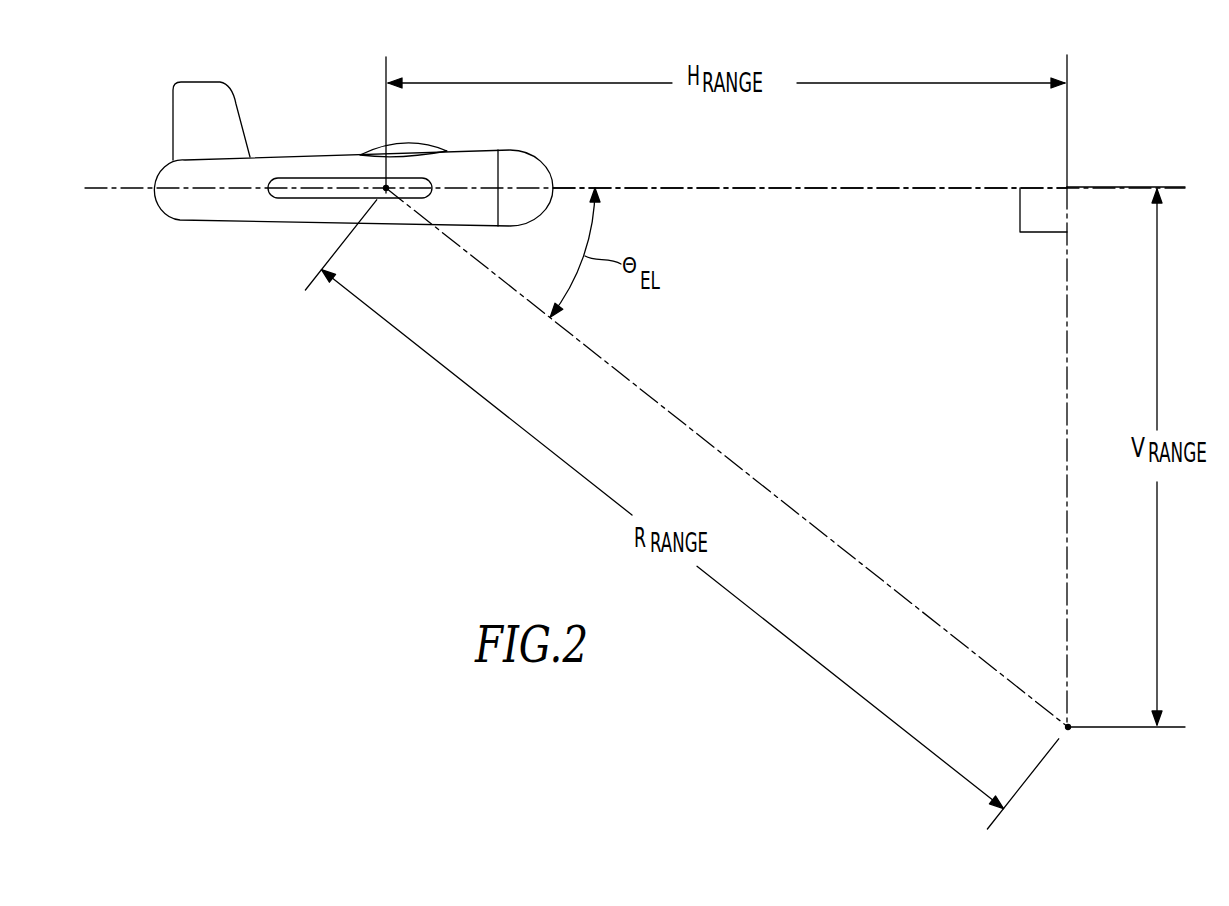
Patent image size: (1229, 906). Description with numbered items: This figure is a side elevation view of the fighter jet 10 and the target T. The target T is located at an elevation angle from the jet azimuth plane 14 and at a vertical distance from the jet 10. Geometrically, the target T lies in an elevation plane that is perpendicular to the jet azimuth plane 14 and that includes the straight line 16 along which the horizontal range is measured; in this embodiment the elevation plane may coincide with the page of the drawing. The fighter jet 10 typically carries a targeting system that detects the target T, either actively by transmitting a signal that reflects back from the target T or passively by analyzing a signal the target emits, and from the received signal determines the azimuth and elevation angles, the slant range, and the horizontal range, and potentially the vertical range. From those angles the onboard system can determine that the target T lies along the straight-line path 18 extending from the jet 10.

The fighter jet 10 is at (297, 156).
The jet azimuth plane 14 is at (141, 188).
The straight line 16 is at (761, 190).
The straight-line path 18 is at (715, 445).
The target T is at (1072, 733).